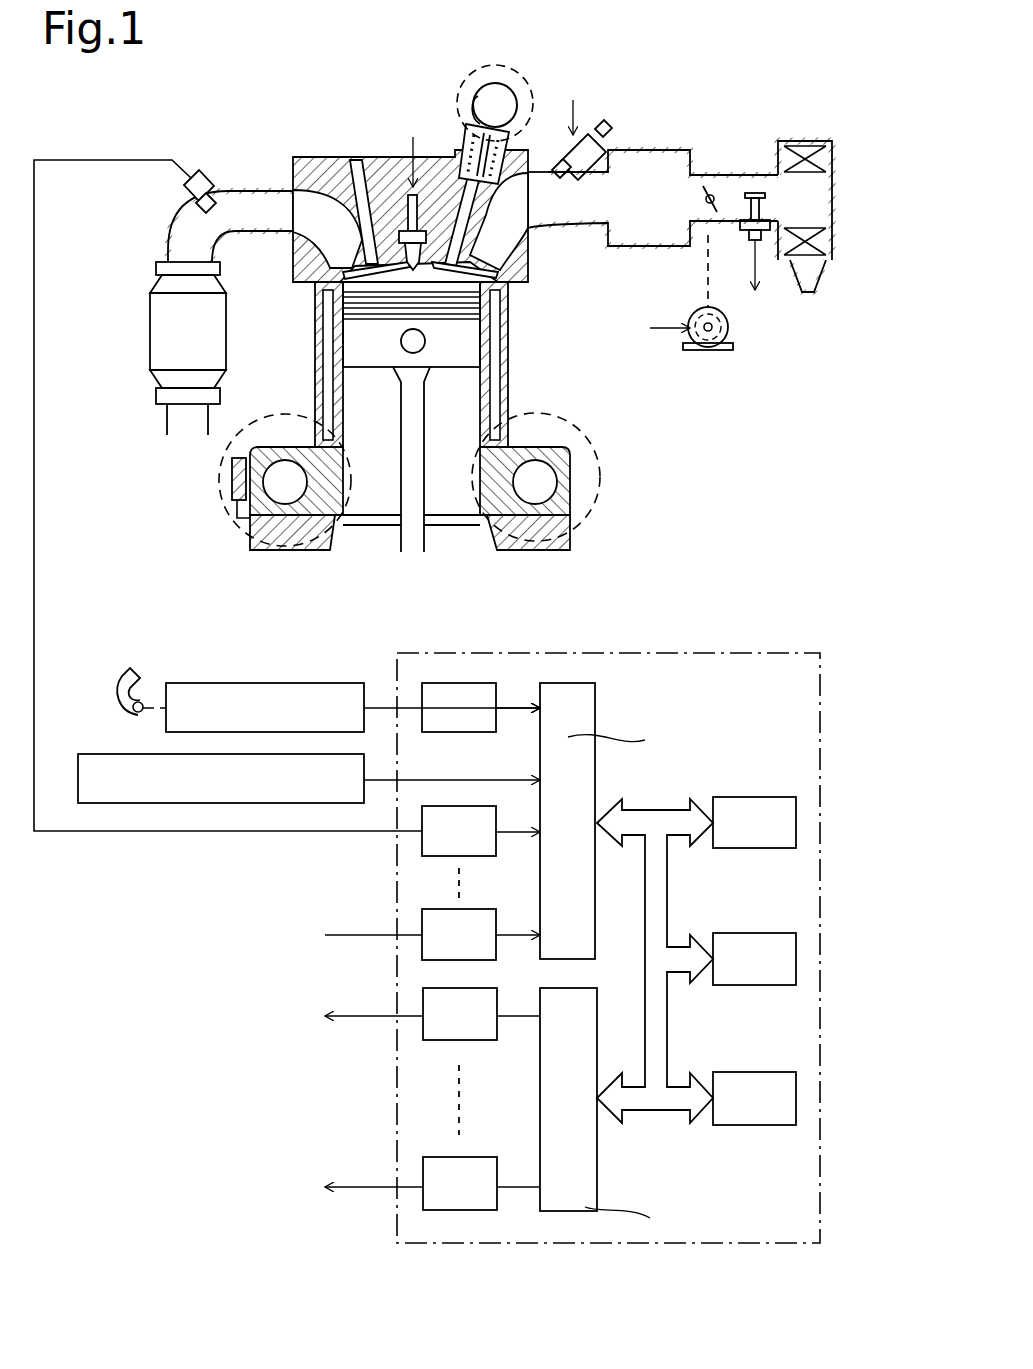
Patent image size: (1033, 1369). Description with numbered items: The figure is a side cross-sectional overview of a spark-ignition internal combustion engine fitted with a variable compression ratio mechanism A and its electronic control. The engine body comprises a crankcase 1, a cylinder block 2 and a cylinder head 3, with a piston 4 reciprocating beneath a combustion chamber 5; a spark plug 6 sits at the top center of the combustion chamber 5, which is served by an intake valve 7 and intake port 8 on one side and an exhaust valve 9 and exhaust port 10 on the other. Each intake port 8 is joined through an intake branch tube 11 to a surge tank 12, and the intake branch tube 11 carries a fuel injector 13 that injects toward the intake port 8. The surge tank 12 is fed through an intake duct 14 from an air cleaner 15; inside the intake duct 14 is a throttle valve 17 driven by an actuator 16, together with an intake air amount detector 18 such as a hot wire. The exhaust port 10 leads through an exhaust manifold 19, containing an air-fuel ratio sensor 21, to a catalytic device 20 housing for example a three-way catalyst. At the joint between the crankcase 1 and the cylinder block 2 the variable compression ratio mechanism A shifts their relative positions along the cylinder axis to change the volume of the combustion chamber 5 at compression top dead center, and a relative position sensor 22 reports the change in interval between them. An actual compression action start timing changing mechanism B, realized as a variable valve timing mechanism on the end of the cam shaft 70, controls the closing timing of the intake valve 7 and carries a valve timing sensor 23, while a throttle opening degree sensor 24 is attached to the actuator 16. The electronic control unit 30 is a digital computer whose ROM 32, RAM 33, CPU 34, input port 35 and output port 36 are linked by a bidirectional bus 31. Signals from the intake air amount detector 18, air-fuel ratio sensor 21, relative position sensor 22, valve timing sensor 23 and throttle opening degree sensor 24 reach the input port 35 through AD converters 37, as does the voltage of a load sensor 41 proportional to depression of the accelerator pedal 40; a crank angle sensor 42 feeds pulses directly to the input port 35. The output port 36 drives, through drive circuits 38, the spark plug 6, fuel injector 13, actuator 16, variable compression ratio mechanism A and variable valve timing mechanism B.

The crankcase 1 is at (520, 538).
The cylinder block 2 is at (505, 374).
The cylinder head 3 is at (527, 272).
The piston 4 is at (357, 339).
The combustion chamber 5 is at (400, 278).
The spark plug 6 is at (400, 197).
The intake valve 7 is at (482, 302).
The intake port 8 is at (533, 240).
The exhaust valve 9 is at (318, 306).
The exhaust port 10 is at (300, 257).
The intake branch tube 11 is at (597, 172).
The surge tank 12 is at (674, 148).
The fuel injector 13 is at (586, 120).
The intake duct 14 is at (762, 173).
The air cleaner 15 is at (790, 140).
The actuator 16 is at (690, 342).
The throttle valve 17 is at (714, 212).
The intake air amount detector 18 is at (767, 208).
The exhaust manifold 19 is at (240, 190).
The catalytic device 20 is at (162, 322).
The air-fuel ratio sensor 21 is at (192, 205).
The relative position sensor 22 is at (226, 484).
The valve timing sensor 23 is at (505, 82).
The throttle opening degree sensor 24 is at (727, 325).
The electronic control unit 30 is at (800, 645).
The bidirectional bus 31 is at (653, 810).
The ROM 32 is at (752, 797).
The RAM 33 is at (752, 933).
The CPU 34 is at (752, 1072).
The input port 35 is at (595, 702).
The output port 36 is at (597, 1184).
The AD converter 37 is at (470, 683).
The drive circuit 38 is at (423, 1162).
The accelerator pedal 40 is at (133, 675).
The load sensor 41 is at (272, 683).
The crank angle sensor 42 is at (108, 754).
The cam shaft 70 is at (493, 98).
The variable compression ratio mechanism A is at (230, 520).
The actual compression action start timing changing mechanism B is at (532, 78).